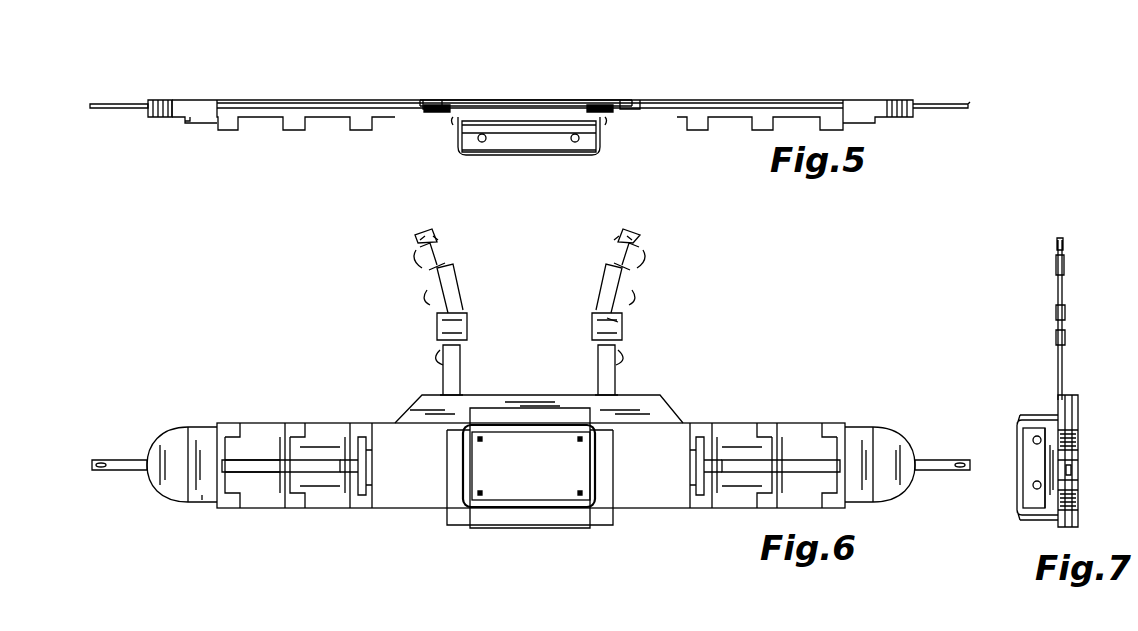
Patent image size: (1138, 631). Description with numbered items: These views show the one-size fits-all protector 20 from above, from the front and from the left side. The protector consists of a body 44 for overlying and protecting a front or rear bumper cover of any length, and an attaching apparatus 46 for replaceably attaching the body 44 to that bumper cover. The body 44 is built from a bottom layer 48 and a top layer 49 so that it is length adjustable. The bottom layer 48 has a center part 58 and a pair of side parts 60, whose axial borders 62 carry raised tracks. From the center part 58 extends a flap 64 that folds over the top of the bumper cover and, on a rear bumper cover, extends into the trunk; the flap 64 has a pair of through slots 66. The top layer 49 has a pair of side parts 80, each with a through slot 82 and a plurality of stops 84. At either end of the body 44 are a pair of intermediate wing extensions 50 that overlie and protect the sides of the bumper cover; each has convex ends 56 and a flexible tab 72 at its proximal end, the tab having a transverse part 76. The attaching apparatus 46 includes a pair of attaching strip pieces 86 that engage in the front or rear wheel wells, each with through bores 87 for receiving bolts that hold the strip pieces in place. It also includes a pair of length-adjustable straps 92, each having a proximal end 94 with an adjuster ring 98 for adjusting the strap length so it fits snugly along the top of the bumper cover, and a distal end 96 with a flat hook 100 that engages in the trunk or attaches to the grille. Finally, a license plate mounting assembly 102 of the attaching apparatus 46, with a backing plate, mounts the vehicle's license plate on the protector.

In FIG. 5, the one-size fits-all protector 20 is at (420, 158).
In FIG. 6, the one-size fits-all protector 20 is at (220, 378).
In FIG. 5, the body 44 is at (293, 99).
In FIG. 6, the body 44 is at (325, 421).
In FIG. 7, the body 44 is at (1078, 478).
In FIG. 5, the attaching apparatus 46 is at (606, 127).
In FIG. 6, the attaching apparatus 46 is at (624, 318).
In FIG. 5, the bottom layer 48 is at (407, 99).
In FIG. 7, the bottom layer 48 is at (1079, 449).
In FIG. 6, the top layer 49 is at (335, 436).
In FIG. 5, the pair of intermediate wing extensions 50 is at (182, 121).
In FIG. 6, the pair of intermediate wing extensions 50 is at (165, 425).
In FIG. 5, the convex ends 56 is at (150, 100).
In FIG. 6, the convex ends 56 is at (178, 478).
In FIG. 5, the center part of bottom layer 58 is at (520, 100).
In FIG. 6, the center part of bottom layer 58 is at (590, 525).
In FIG. 5, the pair of side parts of bottom layer 60 is at (343, 100).
In FIG. 5, the axial borders 62 is at (258, 100).
In FIG. 6, the flap 64 is at (515, 395).
In FIG. 6, the pair of through slots 66 is at (443, 393).
In FIG. 5, the flexible tab 72 is at (350, 119).
In FIG. 6, the flexible tab 72 is at (366, 492).
In FIG. 6, the transverse part 76 is at (364, 436).
In FIG. 5, the pair of side parts of top layer 80 is at (266, 118).
In FIG. 6, the pair of side parts of top layer 80 is at (258, 436).
In FIG. 6, the through slot 82 is at (257, 473).
In FIG. 5, the plurality of stops 84 is at (228, 131).
In FIG. 6, the plurality of stops 84 is at (292, 502).
In FIG. 5, the pair of attaching strip pieces 86 is at (120, 110).
In FIG. 6, the pair of attaching strip pieces 86 is at (137, 458).
In FIG. 6, the through bores 87 is at (102, 460).
In FIG. 6, the pair of length-adjustable straps 92 is at (529, 304).
In FIG. 7, the pair of length-adjustable straps 92 is at (1056, 290).
In FIG. 6, the proximal end of strap 94 is at (587, 388).
In FIG. 6, the distal end of strap 96 is at (527, 246).
In FIG. 6, the adjuster ring 98 is at (437, 325).
In FIG. 6, the flat hook 100 is at (526, 232).
In FIG. 7, the flat hook 100 is at (1063, 243).
In FIG. 5, the license plate mounting assembly 102 is at (590, 153).
In FIG. 6, the license plate mounting assembly 102 is at (525, 508).
In FIG. 7, the license plate mounting assembly 102 is at (1018, 455).